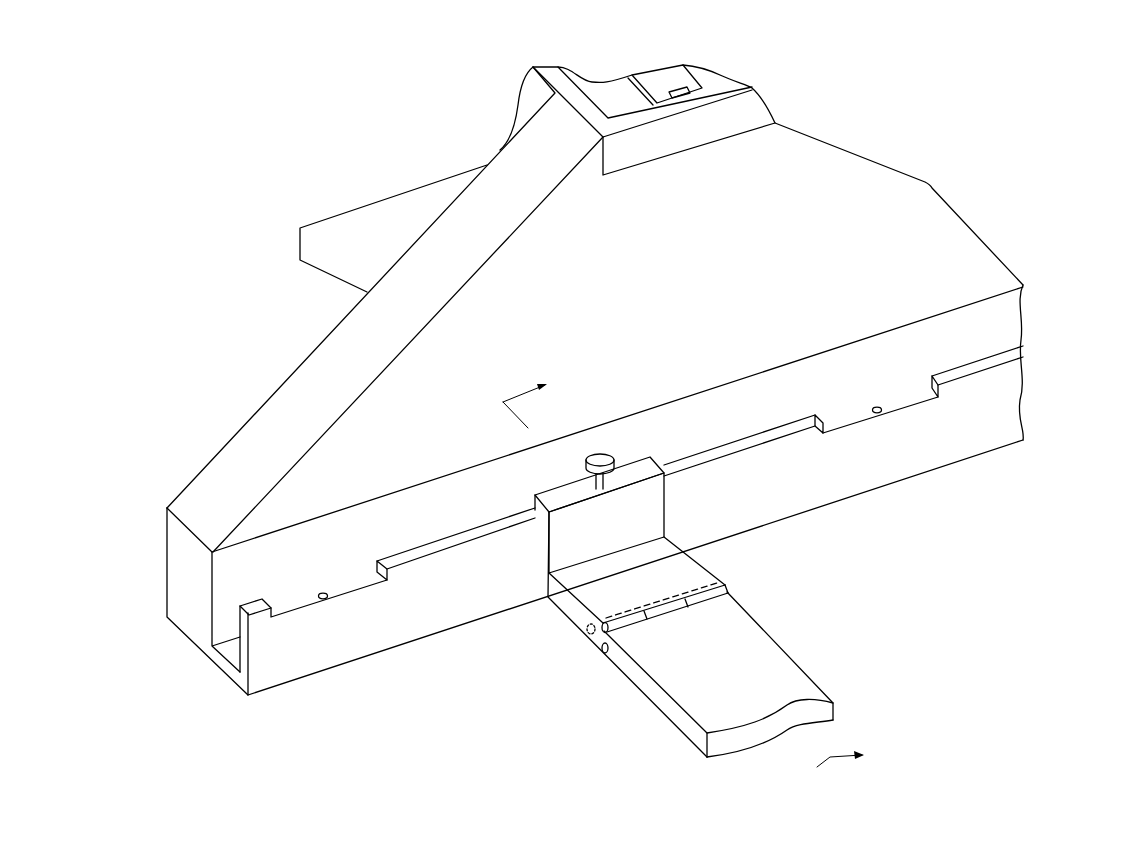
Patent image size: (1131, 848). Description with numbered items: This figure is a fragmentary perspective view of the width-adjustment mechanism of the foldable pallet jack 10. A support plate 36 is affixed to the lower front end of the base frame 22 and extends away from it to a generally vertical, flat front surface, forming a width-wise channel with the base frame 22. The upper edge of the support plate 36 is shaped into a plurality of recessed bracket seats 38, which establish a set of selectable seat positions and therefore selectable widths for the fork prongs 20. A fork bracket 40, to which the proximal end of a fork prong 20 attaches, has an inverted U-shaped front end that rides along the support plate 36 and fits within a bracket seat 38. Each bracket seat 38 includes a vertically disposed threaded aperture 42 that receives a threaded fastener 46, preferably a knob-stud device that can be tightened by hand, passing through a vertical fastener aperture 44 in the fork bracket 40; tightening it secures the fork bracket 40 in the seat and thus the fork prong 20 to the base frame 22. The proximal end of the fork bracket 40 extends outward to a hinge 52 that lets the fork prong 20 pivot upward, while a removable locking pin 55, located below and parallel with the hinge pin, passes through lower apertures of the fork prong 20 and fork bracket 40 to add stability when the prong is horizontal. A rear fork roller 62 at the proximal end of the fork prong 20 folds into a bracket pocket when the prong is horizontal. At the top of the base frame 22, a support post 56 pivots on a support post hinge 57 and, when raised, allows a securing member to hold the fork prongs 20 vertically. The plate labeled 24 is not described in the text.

The foldable pallet jack 10 is at (1001, 133).
The fork prong 20 is at (795, 687).
The base frame 22 is at (188, 554).
The plate 24 is at (318, 268).
The support plate 36 is at (285, 662).
The bracket seat 38 is at (360, 583).
The fork bracket 40 is at (585, 592).
The threaded aperture 42 is at (324, 599).
The fastener aperture 44 is at (595, 488).
The threaded fastener 46 is at (598, 458).
The hinge 52 is at (700, 598).
The locking pin 55 is at (604, 655).
The support post 56 is at (675, 80).
The support post hinge 57 is at (679, 92).
The rear fork roller 62 is at (589, 635).